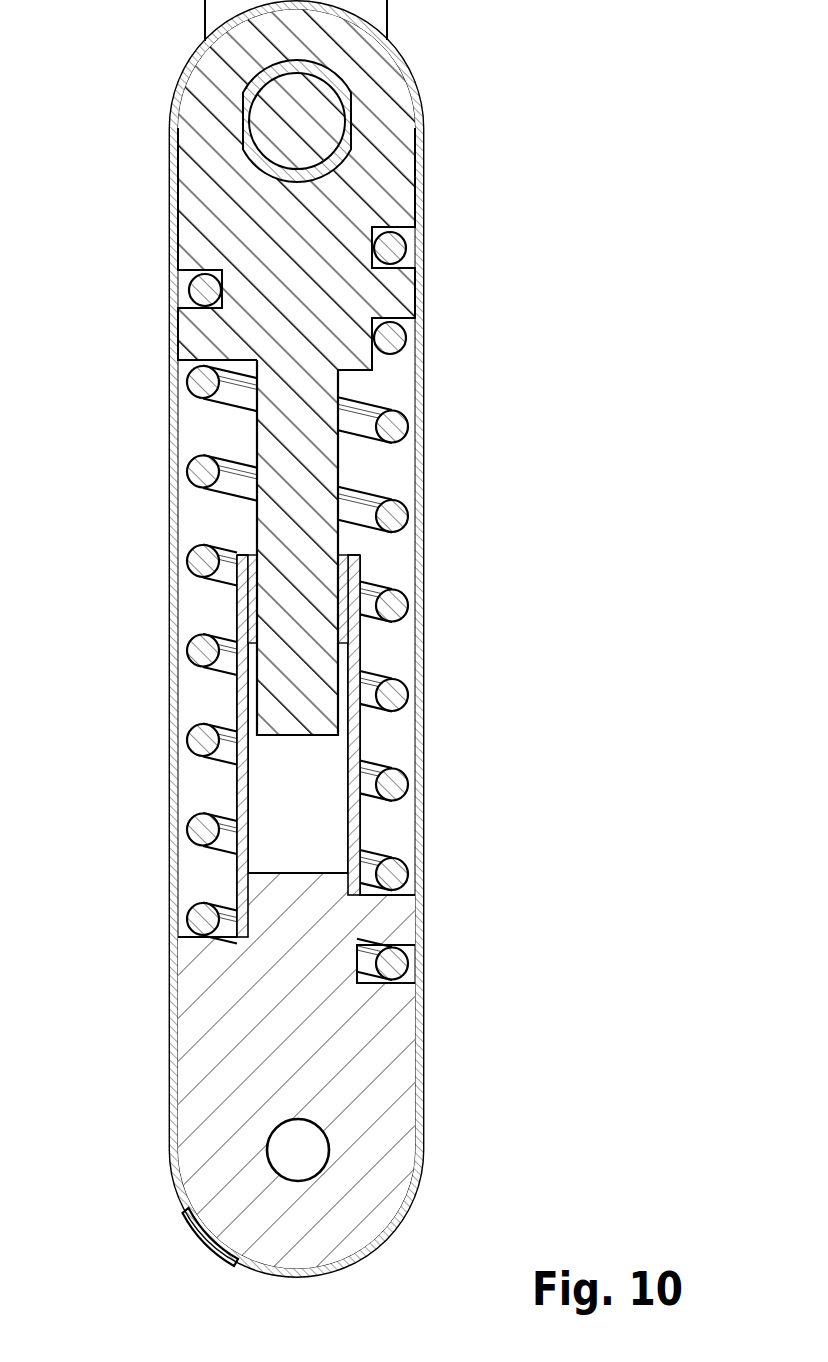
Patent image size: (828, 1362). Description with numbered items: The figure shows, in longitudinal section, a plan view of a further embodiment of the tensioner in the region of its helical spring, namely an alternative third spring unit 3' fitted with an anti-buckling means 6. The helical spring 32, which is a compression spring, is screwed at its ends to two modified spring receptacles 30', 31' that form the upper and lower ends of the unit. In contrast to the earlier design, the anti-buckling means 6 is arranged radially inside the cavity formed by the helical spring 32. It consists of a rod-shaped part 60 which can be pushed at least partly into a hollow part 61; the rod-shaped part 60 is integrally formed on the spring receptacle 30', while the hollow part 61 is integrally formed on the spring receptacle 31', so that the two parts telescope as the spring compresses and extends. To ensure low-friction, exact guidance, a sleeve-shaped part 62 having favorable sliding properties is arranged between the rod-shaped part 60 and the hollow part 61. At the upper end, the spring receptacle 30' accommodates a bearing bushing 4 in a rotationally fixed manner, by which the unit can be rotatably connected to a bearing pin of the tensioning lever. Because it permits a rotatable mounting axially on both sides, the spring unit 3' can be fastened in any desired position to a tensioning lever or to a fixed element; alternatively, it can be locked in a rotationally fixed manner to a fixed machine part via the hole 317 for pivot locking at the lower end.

The spring unit 3' is at (241, 639).
The spring receptacle 30' is at (355, 320).
The spring receptacle 31' is at (356, 916).
The bearing bushing 4 is at (398, 168).
The anti-buckling means 6 is at (380, 555).
The rod-shaped part 60 is at (313, 457).
The hollow part 61 is at (353, 657).
The sleeve-shaped part 62 is at (250, 572).
The helical spring 32 is at (368, 770).
The hole 317 is at (317, 1150).